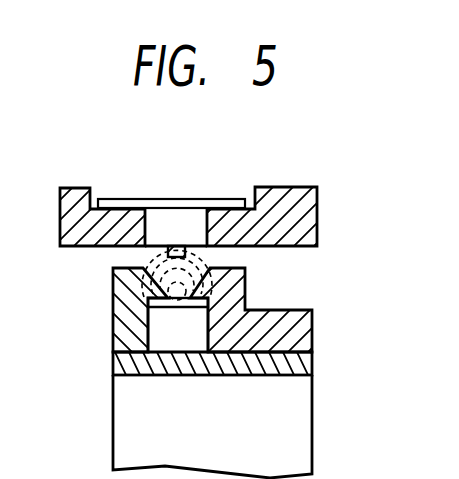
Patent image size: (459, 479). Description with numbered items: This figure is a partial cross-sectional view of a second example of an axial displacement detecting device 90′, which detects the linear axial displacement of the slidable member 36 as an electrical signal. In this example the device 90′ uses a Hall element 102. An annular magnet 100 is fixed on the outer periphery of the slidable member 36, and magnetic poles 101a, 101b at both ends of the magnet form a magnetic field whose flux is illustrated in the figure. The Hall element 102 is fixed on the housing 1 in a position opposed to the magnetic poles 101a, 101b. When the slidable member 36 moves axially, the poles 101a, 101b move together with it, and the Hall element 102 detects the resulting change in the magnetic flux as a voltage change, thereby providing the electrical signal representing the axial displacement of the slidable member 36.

The housing 1 is at (301, 196).
The Hall element 102 is at (185, 244).
The axial displacement detecting device 90′ is at (172, 186).
The magnetic pole 101a is at (300, 320).
The magnetic pole 101b is at (136, 315).
The annular magnet 100 is at (177, 342).
The slidable member 36 is at (313, 358).